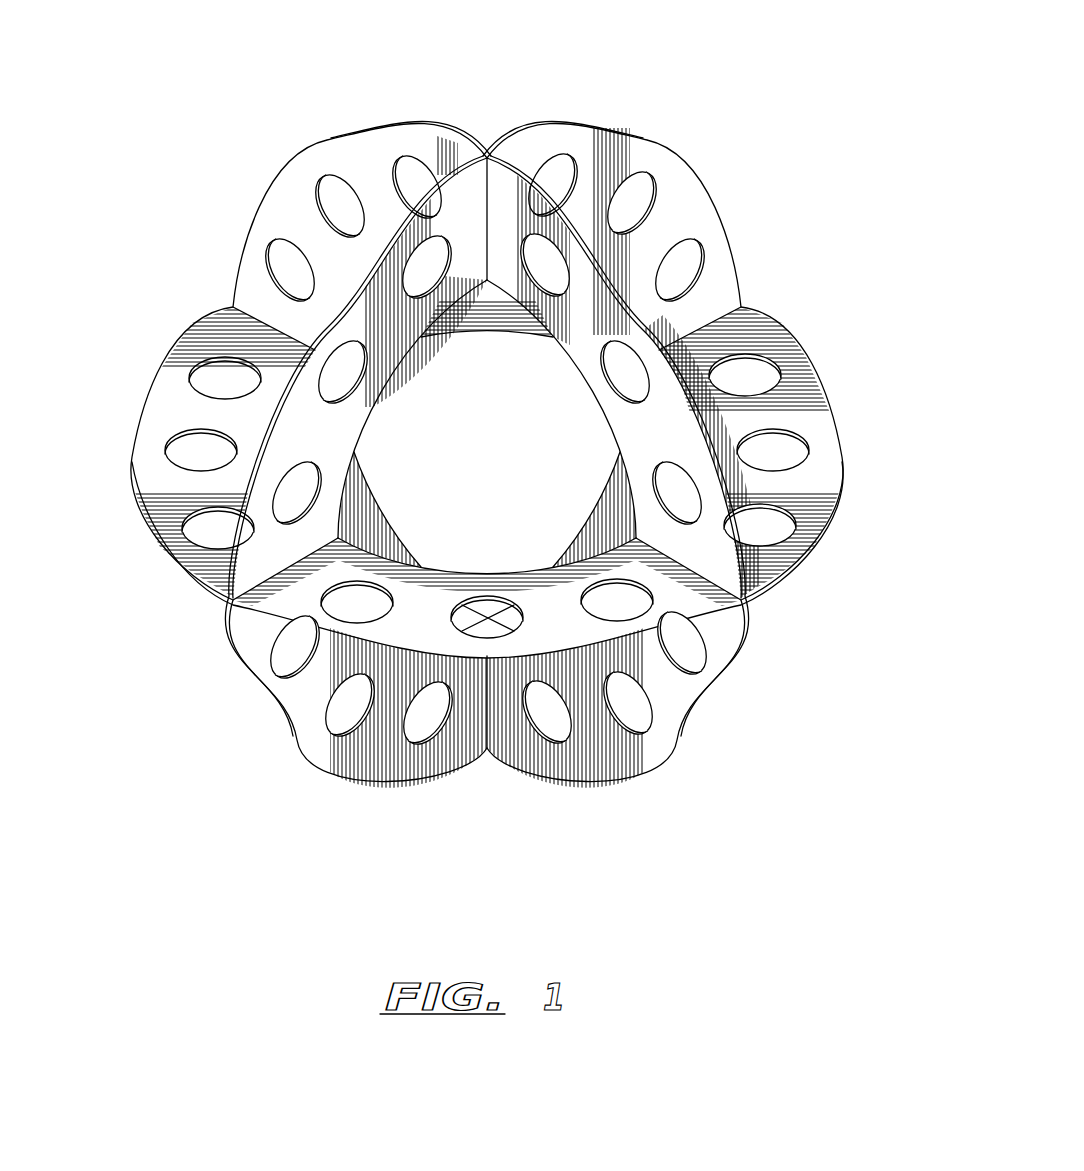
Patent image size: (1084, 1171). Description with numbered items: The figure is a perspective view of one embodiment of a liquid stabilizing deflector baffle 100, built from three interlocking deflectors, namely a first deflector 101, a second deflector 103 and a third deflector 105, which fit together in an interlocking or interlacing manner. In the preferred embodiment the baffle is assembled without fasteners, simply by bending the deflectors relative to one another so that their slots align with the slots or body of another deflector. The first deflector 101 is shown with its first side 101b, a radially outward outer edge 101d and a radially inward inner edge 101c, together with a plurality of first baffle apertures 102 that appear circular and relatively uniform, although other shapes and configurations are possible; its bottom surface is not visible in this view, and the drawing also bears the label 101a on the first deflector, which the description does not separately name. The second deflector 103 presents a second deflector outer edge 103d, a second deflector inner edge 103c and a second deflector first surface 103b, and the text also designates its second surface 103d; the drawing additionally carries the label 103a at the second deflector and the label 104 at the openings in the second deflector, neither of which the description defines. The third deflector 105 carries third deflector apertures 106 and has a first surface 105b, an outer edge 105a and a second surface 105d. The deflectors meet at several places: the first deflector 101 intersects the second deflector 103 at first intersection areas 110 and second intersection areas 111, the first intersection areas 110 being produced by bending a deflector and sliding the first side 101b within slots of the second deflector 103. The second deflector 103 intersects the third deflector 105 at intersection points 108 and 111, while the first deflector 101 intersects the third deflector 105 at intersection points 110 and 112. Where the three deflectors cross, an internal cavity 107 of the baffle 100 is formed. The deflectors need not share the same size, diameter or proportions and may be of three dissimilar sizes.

The liquid stabilizing deflector baffle 100 is at (772, 44).
The first deflector 101 is at (160, 378).
The first plate end 101a is at (193, 572).
The first side of first deflector 101b is at (207, 423).
The inner edge of first deflector 101c is at (481, 333).
The outer edge of first deflector 101d is at (807, 560).
The first baffle apertures 102 is at (750, 372).
The second deflector 103 is at (288, 177).
The second plate end 103a is at (736, 545).
The second deflector first surface 103b is at (630, 332).
The second deflector inner edge 103c is at (393, 530).
The second deflector outer edge 103d is at (404, 124).
The perforations of second plate 104 is at (416, 190).
The third deflector 105 is at (657, 150).
The outer edge of third deflector 105a is at (593, 512).
The first surface of third deflector 105b is at (657, 217).
The second surface of third deflector 105d is at (565, 124).
The third deflector apertures 106 is at (635, 200).
The internal cavity 107 is at (473, 454).
The intersection point 108 is at (488, 150).
The first intersection area 110 is at (745, 302).
The second intersection area 111 is at (230, 303).
The intersection point 112 is at (748, 602).